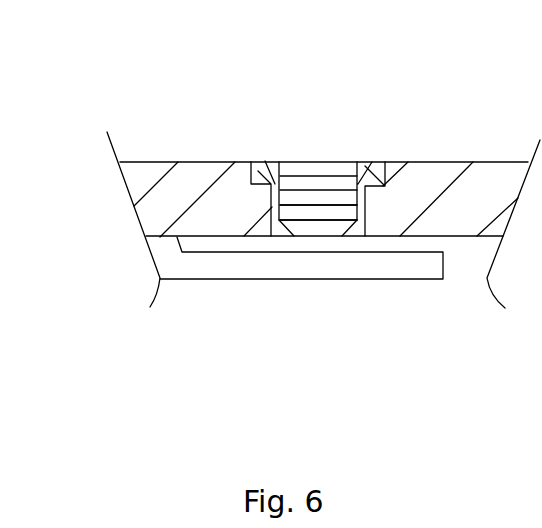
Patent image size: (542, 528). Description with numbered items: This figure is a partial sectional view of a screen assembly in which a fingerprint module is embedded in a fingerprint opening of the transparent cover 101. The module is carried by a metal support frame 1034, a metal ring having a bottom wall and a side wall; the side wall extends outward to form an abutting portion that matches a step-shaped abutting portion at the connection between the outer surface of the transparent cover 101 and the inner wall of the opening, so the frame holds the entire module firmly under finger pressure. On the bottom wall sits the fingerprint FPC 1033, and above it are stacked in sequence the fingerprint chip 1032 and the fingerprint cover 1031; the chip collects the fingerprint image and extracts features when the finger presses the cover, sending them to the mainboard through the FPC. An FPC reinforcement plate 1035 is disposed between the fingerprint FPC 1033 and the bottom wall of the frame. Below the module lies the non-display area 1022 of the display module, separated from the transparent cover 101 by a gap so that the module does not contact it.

The transparent cover 101 is at (135, 177).
The non-display area 1022 is at (215, 267).
The fingerprint cover 1031 is at (305, 165).
The fingerprint chip 1032 is at (353, 184).
The fingerprint FPC 1033 is at (338, 202).
The metal support frame 1034 is at (259, 161).
The FPC reinforcement plate 1035 is at (316, 213).